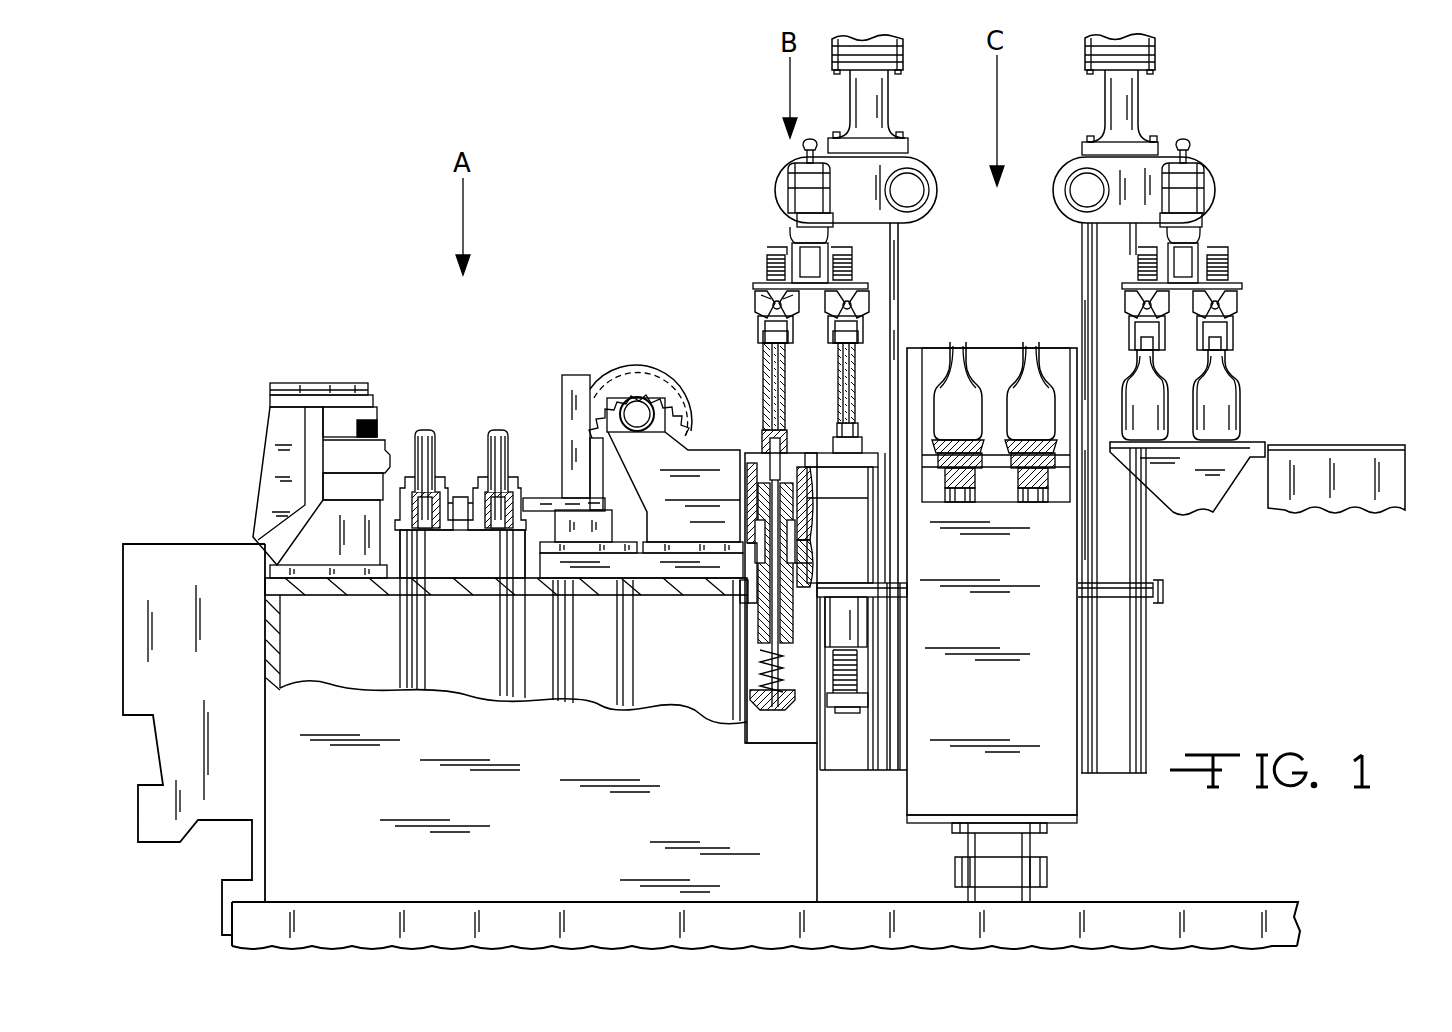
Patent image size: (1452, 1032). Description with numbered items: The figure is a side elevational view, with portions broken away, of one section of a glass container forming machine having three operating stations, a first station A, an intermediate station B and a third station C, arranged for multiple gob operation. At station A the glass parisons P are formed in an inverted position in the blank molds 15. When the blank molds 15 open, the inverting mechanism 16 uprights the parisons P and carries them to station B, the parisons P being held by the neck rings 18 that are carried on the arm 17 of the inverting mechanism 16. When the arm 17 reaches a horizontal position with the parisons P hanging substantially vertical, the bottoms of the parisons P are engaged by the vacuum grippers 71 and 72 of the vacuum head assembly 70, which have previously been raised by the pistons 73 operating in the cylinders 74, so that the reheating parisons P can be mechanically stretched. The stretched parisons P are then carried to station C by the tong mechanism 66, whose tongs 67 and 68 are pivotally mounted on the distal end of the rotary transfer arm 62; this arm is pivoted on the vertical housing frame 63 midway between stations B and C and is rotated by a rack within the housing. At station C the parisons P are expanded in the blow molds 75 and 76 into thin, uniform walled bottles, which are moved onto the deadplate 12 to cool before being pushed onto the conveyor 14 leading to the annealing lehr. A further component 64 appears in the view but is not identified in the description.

The deadplate 12 is at (1213, 508).
The conveyor 14 is at (1372, 445).
The blank molds 15 is at (377, 418).
The inverting mechanism 16 is at (690, 352).
The arm 17 is at (547, 484).
The neck rings 18 is at (442, 478).
The rotary transfer arm 62 is at (866, 196).
The vertical housing frame 63 is at (884, 249).
The housing 64 is at (905, 732).
The tong mechanism 66 is at (822, 211).
The tong 67 is at (795, 317).
The tong 68 is at (860, 300).
The vacuum head assembly 70 is at (860, 500).
The vacuum gripper 71 is at (797, 417).
The vacuum gripper 72 is at (868, 427).
The pistons 73 is at (800, 571).
The cylinders 74 is at (798, 536).
The blow mold 75 is at (985, 358).
The blow mold 76 is at (1055, 360).
The parisons P is at (435, 428).